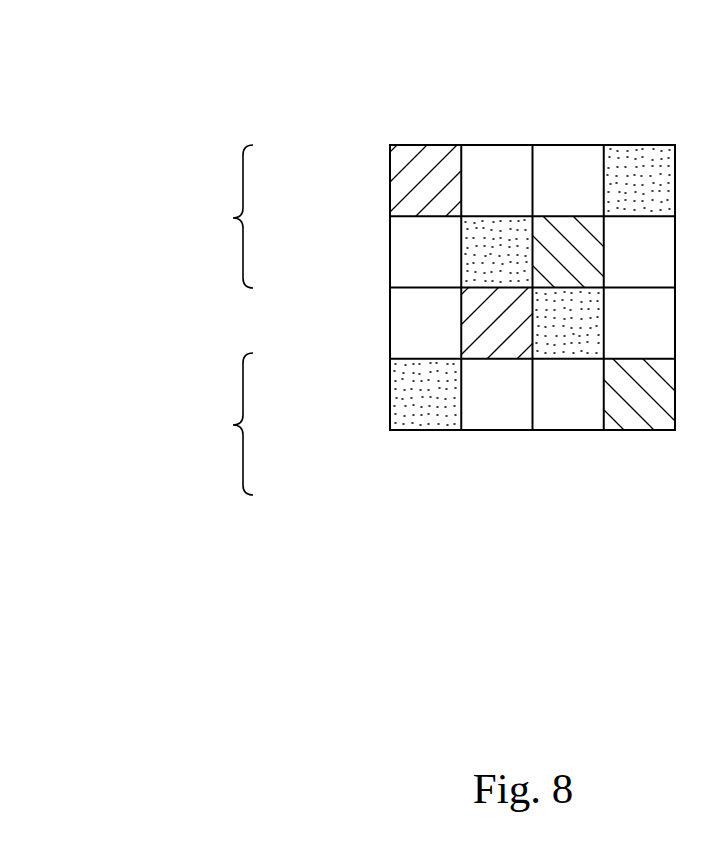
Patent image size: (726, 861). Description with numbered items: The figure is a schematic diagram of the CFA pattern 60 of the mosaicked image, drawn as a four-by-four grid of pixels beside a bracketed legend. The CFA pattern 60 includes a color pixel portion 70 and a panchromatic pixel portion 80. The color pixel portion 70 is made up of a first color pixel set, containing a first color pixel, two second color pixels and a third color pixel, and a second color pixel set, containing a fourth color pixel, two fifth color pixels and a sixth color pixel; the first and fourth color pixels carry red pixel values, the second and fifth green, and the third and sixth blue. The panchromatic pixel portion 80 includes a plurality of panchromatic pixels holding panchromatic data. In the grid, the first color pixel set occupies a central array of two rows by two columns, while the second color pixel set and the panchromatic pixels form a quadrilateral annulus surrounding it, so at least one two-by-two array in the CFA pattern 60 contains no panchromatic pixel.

The CFA pattern 60 is at (50, 47).
The color pixel portion 70 is at (180, 200).
The panchromatic pixel portion 80 is at (182, 535).